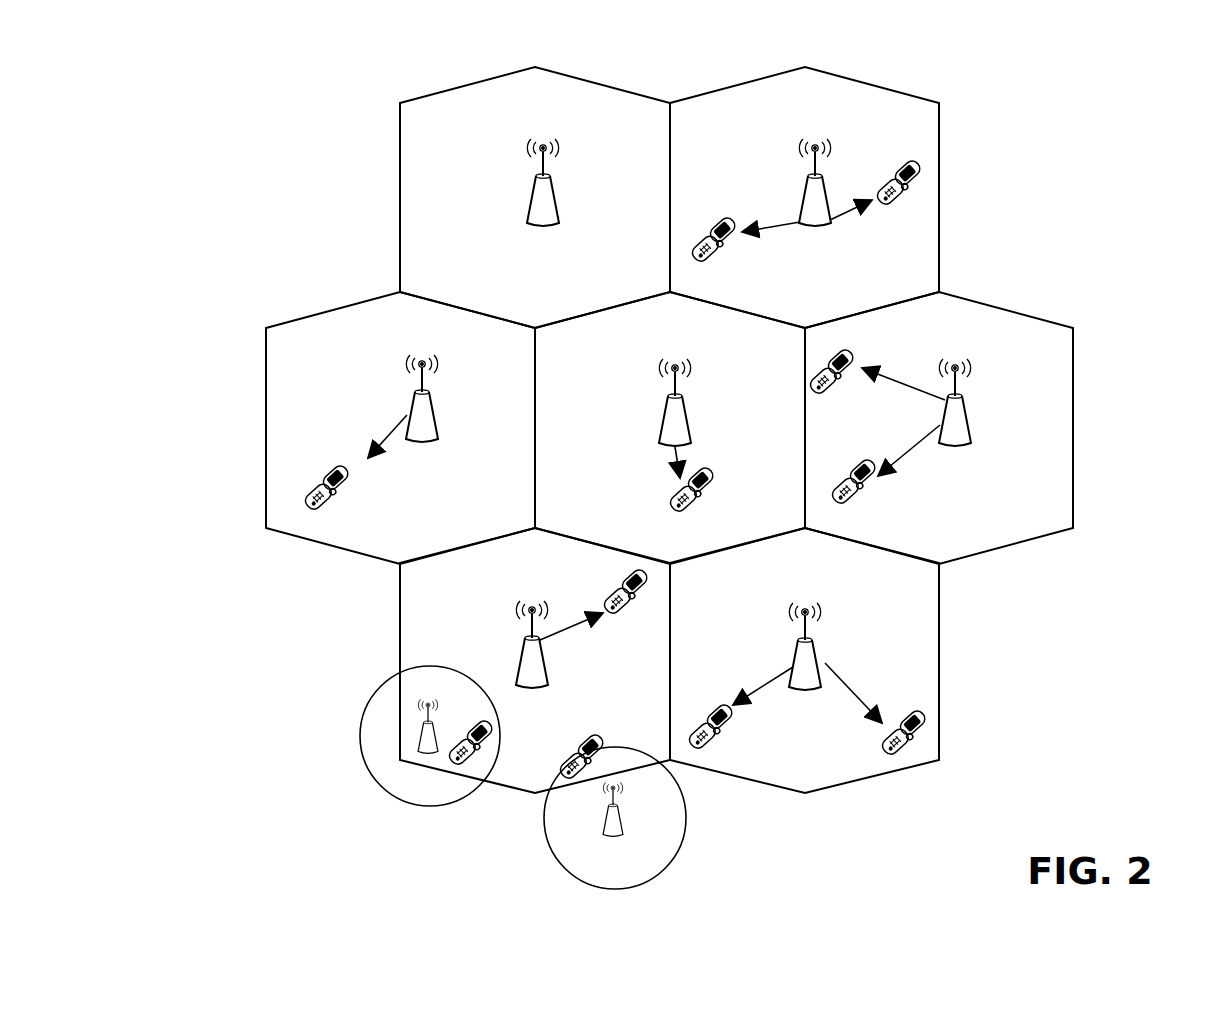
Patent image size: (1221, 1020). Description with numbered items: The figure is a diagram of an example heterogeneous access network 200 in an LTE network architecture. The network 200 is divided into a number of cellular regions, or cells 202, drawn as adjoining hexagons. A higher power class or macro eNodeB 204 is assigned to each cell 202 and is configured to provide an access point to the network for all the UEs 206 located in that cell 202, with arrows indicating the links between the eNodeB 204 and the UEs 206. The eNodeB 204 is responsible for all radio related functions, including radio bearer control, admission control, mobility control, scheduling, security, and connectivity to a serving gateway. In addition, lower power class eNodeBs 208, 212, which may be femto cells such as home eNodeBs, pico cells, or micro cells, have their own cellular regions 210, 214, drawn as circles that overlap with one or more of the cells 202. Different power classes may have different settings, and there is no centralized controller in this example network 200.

The heterogeneous access network 200 is at (1080, 100).
The cellular region (cell) 202 is at (400, 153).
The macro eNodeB 204 is at (538, 134).
The UE 206 is at (913, 170).
The lower power class eNodeB 208 is at (425, 693).
The cellular region 210 is at (373, 738).
The lower power class eNodeB 212 is at (627, 838).
The cellular region 214 is at (567, 822).